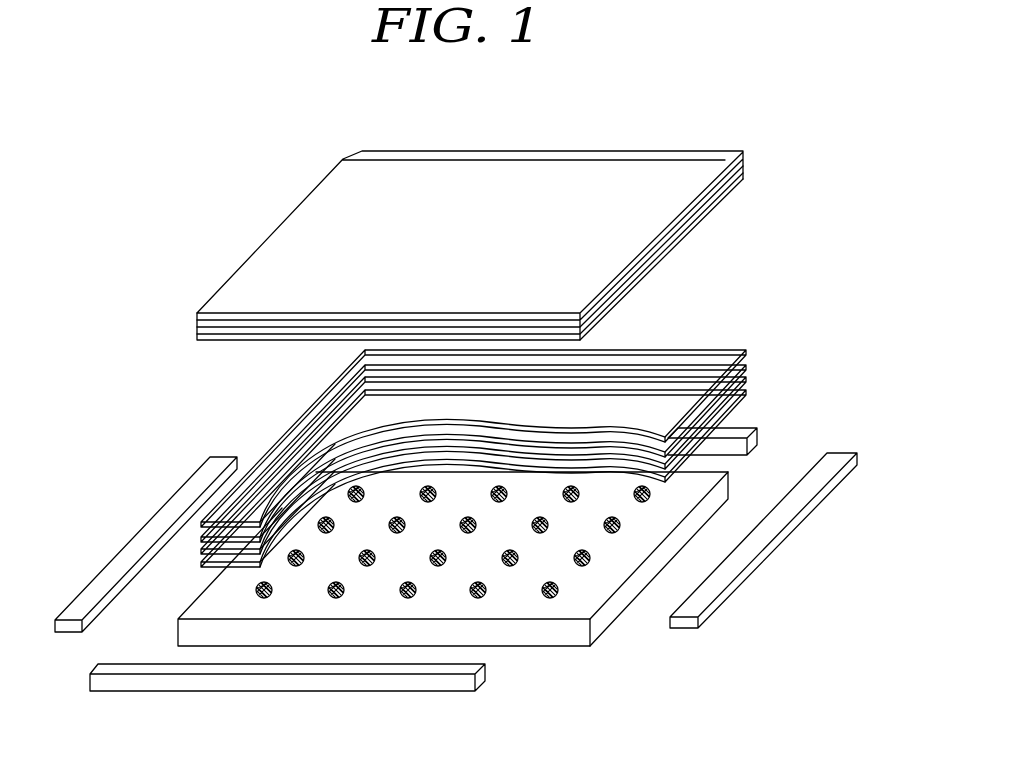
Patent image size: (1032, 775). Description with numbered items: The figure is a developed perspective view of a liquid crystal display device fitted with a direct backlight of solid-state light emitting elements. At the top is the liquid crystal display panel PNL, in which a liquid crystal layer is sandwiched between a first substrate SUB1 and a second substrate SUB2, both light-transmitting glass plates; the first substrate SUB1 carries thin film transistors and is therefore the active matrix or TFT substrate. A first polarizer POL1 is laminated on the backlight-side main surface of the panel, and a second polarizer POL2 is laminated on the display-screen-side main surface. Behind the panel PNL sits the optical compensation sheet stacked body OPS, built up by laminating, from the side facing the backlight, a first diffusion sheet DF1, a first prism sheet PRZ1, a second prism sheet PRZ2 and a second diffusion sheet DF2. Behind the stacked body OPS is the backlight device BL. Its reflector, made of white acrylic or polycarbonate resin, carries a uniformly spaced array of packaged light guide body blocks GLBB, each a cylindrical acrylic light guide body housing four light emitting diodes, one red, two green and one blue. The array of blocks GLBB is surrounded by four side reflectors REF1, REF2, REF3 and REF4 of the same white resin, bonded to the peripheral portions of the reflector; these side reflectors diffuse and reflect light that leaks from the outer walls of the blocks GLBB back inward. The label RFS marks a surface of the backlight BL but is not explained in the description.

The liquid crystal display panel PNL is at (416, 215).
The second polarizer POL2 is at (240, 278).
The first substrate SUB1 is at (197, 320).
The second substrate SUB2 is at (197, 330).
The first polarizer POL1 is at (197, 338).
The optical compensation sheet stacked body OPS is at (555, 443).
The second diffusion sheet DF2 is at (512, 424).
The second prism sheet PRZ2 is at (519, 444).
The first prism sheet PRZ1 is at (519, 462).
The first diffusion sheet DF1 is at (512, 478).
The side reflector REF1 is at (140, 542).
The side reflector REF2 is at (740, 450).
The side reflector REF3 is at (750, 558).
The side reflector REF4 is at (300, 686).
The backlight device BL is at (388, 612).
The reflective side surface RFS is at (605, 618).
The light guide body block GLBB is at (548, 599).